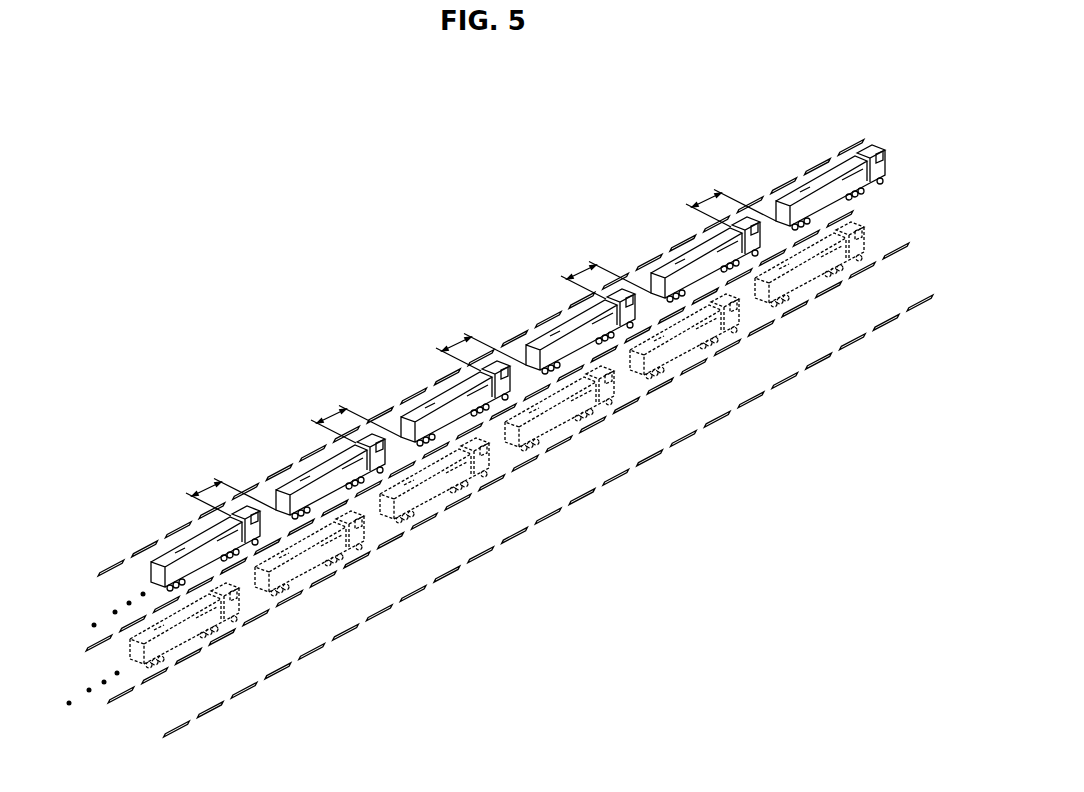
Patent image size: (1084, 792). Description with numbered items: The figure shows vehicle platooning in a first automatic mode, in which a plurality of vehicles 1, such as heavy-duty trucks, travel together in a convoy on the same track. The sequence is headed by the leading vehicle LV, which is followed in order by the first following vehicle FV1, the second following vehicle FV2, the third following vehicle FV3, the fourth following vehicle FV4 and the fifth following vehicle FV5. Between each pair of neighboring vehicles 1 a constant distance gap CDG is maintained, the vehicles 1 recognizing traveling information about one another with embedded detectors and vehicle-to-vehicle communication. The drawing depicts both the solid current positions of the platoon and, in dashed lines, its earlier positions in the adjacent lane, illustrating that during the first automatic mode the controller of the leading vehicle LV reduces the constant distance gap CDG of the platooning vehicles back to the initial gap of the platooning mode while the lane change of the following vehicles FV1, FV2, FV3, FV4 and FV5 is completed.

The vehicle 1 is at (507, 402).
The leading vehicle LV is at (820, 226).
The first following vehicle FV1 is at (695, 298).
The second following vehicle FV2 is at (570, 370).
The third following vehicle FV3 is at (445, 442).
The fourth following vehicle FV4 is at (320, 515).
The fifth following vehicle FV5 is at (195, 587).
The constant distance gap CDG is at (477, 347).